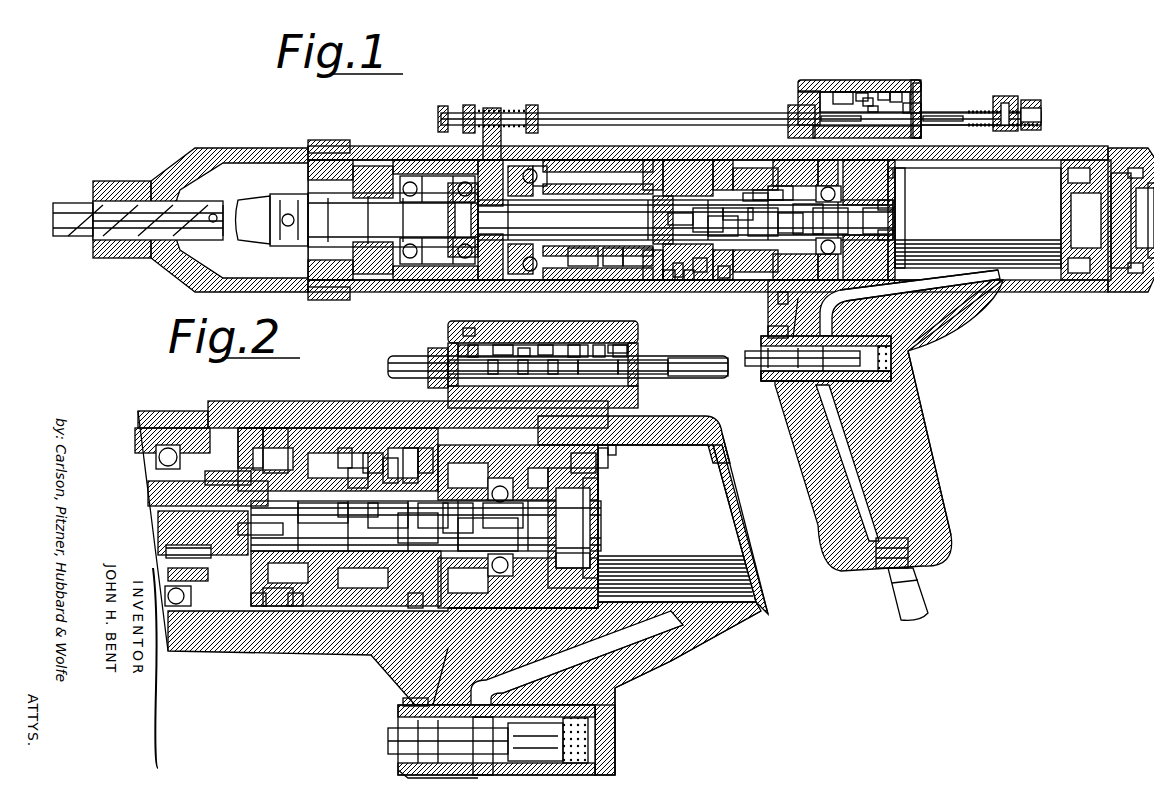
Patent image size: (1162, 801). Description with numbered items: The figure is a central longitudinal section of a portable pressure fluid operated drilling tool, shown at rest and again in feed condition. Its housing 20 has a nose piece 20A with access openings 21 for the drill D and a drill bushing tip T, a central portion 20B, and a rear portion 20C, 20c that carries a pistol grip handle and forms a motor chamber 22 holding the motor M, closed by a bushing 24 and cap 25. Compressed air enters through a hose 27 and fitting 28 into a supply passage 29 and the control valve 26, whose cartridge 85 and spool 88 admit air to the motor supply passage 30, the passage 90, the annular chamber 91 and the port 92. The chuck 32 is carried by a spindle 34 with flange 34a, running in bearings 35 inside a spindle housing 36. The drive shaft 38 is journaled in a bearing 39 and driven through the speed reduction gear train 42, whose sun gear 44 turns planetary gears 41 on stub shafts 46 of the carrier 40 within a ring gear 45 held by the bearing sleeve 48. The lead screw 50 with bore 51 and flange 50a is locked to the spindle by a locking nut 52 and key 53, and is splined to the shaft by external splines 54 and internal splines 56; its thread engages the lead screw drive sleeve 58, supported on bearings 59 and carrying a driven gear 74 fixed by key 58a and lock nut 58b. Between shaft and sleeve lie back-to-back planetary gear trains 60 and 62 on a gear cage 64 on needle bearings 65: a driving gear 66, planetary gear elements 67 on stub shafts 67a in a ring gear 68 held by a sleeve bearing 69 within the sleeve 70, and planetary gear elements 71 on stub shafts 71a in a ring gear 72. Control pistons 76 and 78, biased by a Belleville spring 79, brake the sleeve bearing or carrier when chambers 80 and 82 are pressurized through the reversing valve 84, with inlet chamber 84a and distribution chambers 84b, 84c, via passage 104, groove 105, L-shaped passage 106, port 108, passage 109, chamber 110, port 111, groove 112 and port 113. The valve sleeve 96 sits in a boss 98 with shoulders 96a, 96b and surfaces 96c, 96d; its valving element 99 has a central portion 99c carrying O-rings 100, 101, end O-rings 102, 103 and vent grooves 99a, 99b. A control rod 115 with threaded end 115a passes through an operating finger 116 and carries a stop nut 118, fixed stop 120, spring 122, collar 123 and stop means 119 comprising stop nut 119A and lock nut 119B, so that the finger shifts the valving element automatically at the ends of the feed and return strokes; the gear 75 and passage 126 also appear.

In FIG. 1, the drill bushing tip T is at (62, 195).
In FIG. 1, the drill D is at (205, 206).
In FIG. 1, the motor M is at (1026, 268).
In FIG. 2, the motor M is at (714, 542).
In FIG. 1, the housing 20 is at (582, 289).
In FIG. 2, the housing 20 is at (170, 653).
In FIG. 1, the nose piece 20A is at (185, 152).
In FIG. 1, the central housing portion 20B is at (530, 145).
In FIG. 2, the central housing portion 20B is at (130, 405).
In FIG. 1, the rear housing portion 20C is at (1058, 142).
In FIG. 2, the rear housing portion 20c is at (665, 410).
In FIG. 1, the access openings 21 is at (250, 185).
In FIG. 1, the motor chamber 22 is at (1018, 165).
In FIG. 2, the motor chamber 22 is at (690, 440).
In FIG. 1, the bushing 24 is at (1088, 270).
In FIG. 1, the cap 25 is at (1145, 268).
In FIG. 1, the control valve 26 is at (902, 380).
In FIG. 2, the control valve 26 is at (590, 768).
In FIG. 1, the hose 27 is at (916, 592).
In FIG. 1, the fitting 28 is at (902, 546).
In FIG. 1, the supply passage 29 is at (868, 500).
In FIG. 2, the supply passage 29 is at (392, 767).
In FIG. 1, the motor supply passage 30 is at (950, 285).
In FIG. 2, the motor supply passage 30 is at (668, 606).
In FIG. 1, the chuck 32 is at (336, 145).
In FIG. 1, the spindle 34 is at (398, 250).
In FIG. 1, the radial flange 34a is at (484, 152).
In FIG. 1, the antifriction bearings 35 is at (420, 235).
In FIG. 1, the spindle housing 36 is at (372, 158).
In FIG. 1, the drive shaft 38 is at (572, 236).
In FIG. 2, the drive shaft 38 is at (150, 512).
In FIG. 1, the antifriction bearing 39 is at (828, 200).
In FIG. 2, the antifriction bearing 39 is at (480, 533).
In FIG. 1, the carrier 40 is at (878, 210).
In FIG. 2, the carrier 40 is at (500, 512).
In FIG. 1, the planetary gears 41 is at (905, 236).
In FIG. 2, the planetary gears 41 is at (583, 528).
In FIG. 1, the speed reduction gear train 42 is at (930, 295).
In FIG. 2, the speed reduction gear train 42 is at (640, 650).
In FIG. 1, the sun gear 44 is at (882, 197).
In FIG. 2, the sun gear 44 is at (585, 505).
In FIG. 1, the ring gear 45 is at (908, 308).
In FIG. 1, the stub shafts 46 is at (882, 222).
In FIG. 2, the stub shafts 46 is at (583, 548).
In FIG. 1, the bearing sleeve 48 is at (862, 300).
In FIG. 2, the bearing sleeve 48 is at (545, 620).
In FIG. 1, the lead screw 50 is at (552, 243).
In FIG. 2, the lead screw 50 is at (142, 482).
In FIG. 1, the radial flange 50a is at (492, 252).
In FIG. 1, the bore 51 is at (505, 175).
In FIG. 1, the locking nut 52 is at (472, 242).
In FIG. 1, the key 53 is at (465, 225).
In FIG. 1, the external splines 54 is at (572, 194).
In FIG. 2, the external splines 54 is at (205, 463).
In FIG. 1, the internal splines 56 is at (655, 196).
In FIG. 2, the internal splines 56 is at (158, 542).
In FIG. 1, the lead screw drive sleeve 58 is at (595, 250).
In FIG. 2, the lead screw drive sleeve 58 is at (160, 565).
In FIG. 1, the key 58a is at (672, 210).
In FIG. 2, the key 58a is at (232, 526).
In FIG. 1, the lock nut 58b is at (628, 248).
In FIG. 2, the lock nut 58b is at (210, 572).
In FIG. 1, the antifriction bearings 59 is at (580, 176).
In FIG. 1, the planetary gear train 60 is at (692, 262).
In FIG. 2, the planetary gear train 60 is at (312, 598).
In FIG. 1, the planetary gear train 62 is at (668, 268).
In FIG. 2, the planetary gear train 62 is at (270, 598).
In FIG. 1, the gear cage 64 is at (676, 158).
In FIG. 2, the gear cage 64 is at (300, 420).
In FIG. 1, the needle-type bearing elements 65 is at (712, 228).
In FIG. 2, the needle-type bearing elements 65 is at (300, 496).
In FIG. 1, the driving terminal gear 66 is at (745, 200).
In FIG. 2, the driving terminal gear 66 is at (372, 500).
In FIG. 1, the planetary gear elements 67 is at (735, 165).
In FIG. 2, the planetary gear elements 67 is at (350, 460).
In FIG. 1, the stub shafts 67a is at (728, 224).
In FIG. 2, the stub shafts 67a is at (346, 493).
In FIG. 1, the ring gear 68 is at (753, 182).
In FIG. 2, the ring gear 68 is at (365, 445).
In FIG. 1, the sleeve bearing 69 is at (745, 183).
In FIG. 2, the sleeve bearing 69 is at (337, 440).
In FIG. 1, the sleeve 70 is at (710, 155).
In FIG. 2, the sleeve 70 is at (270, 420).
In FIG. 1, the planetary gear elements 71 is at (660, 272).
In FIG. 2, the planetary gear elements 71 is at (250, 598).
In FIG. 1, the stub shafts 71a is at (682, 272).
In FIG. 2, the stub shafts 71a is at (288, 598).
In FIG. 1, the ring gear 72 is at (660, 150).
In FIG. 2, the ring gear 72 is at (252, 420).
In FIG. 1, the driven gear element 74 is at (692, 224).
In FIG. 2, the driven gear element 74 is at (258, 493).
In FIG. 1, the gear 75 is at (716, 270).
In FIG. 1, the control piston 76 is at (770, 178).
In FIG. 2, the control piston 76 is at (382, 450).
In FIG. 2, the control piston 78 is at (405, 530).
In FIG. 1, the Belleville spring 79 is at (780, 204).
In FIG. 2, the Belleville spring 79 is at (424, 494).
In FIG. 1, the chamber 80 is at (805, 192).
In FIG. 2, the chamber 80 is at (452, 494).
In FIG. 2, the chamber 82 is at (435, 598).
In FIG. 1, the reversing valve 84 is at (835, 82).
In FIG. 2, the reversing valve 84 is at (520, 337).
In FIG. 1, the inlet chamber 84a is at (858, 85).
In FIG. 2, the forward distribution chamber 84b is at (495, 337).
In FIG. 2, the rear distribution chamber 84c is at (540, 337).
In FIG. 1, the cartridge 85 is at (780, 370).
In FIG. 2, the cartridge 85 is at (600, 700).
In FIG. 1, the spool 88 is at (745, 352).
In FIG. 2, the spool 88 is at (385, 728).
In FIG. 1, the passage 90 is at (855, 290).
In FIG. 2, the passage 90 is at (512, 672).
In FIG. 1, the annular chamber 91 is at (900, 318).
In FIG. 2, the annular chamber 91 is at (600, 684).
In FIG. 1, the port 92 is at (878, 170).
In FIG. 2, the port 92 is at (578, 470).
In FIG. 1, the sleeve 96 is at (882, 95).
In FIG. 2, the sleeve 96 is at (628, 322).
In FIG. 2, the tapered internal shoulder 96a is at (530, 355).
In FIG. 2, the tapered internal shoulder 96b is at (588, 355).
In FIG. 1, the tapered annular surface 96c is at (905, 168).
In FIG. 2, the tapered annular surface 96c is at (630, 437).
In FIG. 1, the tapered annular surface 96d is at (830, 88).
In FIG. 2, the tapered annular surface 96d is at (462, 322).
In FIG. 1, the hollow boss 98 is at (915, 80).
In FIG. 2, the hollow boss 98 is at (615, 337).
In FIG. 1, the valving element 99 is at (915, 102).
In FIG. 2, the valving element 99 is at (640, 386).
In FIG. 1, the groove 99a is at (915, 110).
In FIG. 2, the groove 99a is at (620, 354).
In FIG. 1, the groove 99b is at (818, 106).
In FIG. 2, the groove 99b is at (445, 356).
In FIG. 1, the central portion 99c is at (862, 90).
In FIG. 2, the central portion 99c is at (520, 338).
In FIG. 1, the O-ring 100 is at (852, 80).
In FIG. 2, the O-ring 100 is at (553, 352).
In FIG. 1, the O-ring 101 is at (876, 80).
In FIG. 2, the O-ring 101 is at (568, 337).
In FIG. 1, the O-ring 102 is at (915, 92).
In FIG. 2, the O-ring 102 is at (628, 340).
In FIG. 1, the O-ring 103 is at (808, 110).
In FIG. 2, the O-ring 103 is at (455, 338).
In FIG. 2, the passage 104 is at (495, 355).
In FIG. 1, the annular groove 105 is at (792, 278).
In FIG. 2, the annular groove 105 is at (440, 625).
In FIG. 1, the L-shaped passage 106 is at (776, 292).
In FIG. 1, the port 108 is at (886, 82).
In FIG. 2, the port 108 is at (591, 337).
In FIG. 1, the longitudinal passage 109 is at (900, 170).
In FIG. 2, the longitudinal passage 109 is at (600, 445).
In FIG. 1, the annular chamber 110 is at (778, 152).
In FIG. 2, the annular chamber 110 is at (402, 440).
In FIG. 2, the port 111 is at (418, 440).
In FIG. 2, the annular groove 112 is at (408, 600).
In FIG. 1, the port 113 is at (820, 154).
In FIG. 2, the port 113 is at (440, 468).
In FIG. 1, the control rod 115 is at (596, 104).
In FIG. 2, the control rod 115 is at (392, 350).
In FIG. 1, the threaded rear end 115a is at (1028, 100).
In FIG. 1, the operating finger 116 is at (462, 97).
In FIG. 1, the stop nut 118 is at (433, 100).
In FIG. 1, the stop means 119 is at (998, 94).
In FIG. 1, the stop nut 119A is at (997, 80).
In FIG. 1, the lock nut 119B is at (1020, 92).
In FIG. 1, the fixed stop 120 is at (790, 100).
In FIG. 2, the fixed stop 120 is at (428, 345).
In FIG. 1, the spring 122 is at (508, 100).
In FIG. 1, the collar 123 is at (522, 100).
In FIG. 1, the passage 126 is at (762, 325).
In FIG. 2, the passage 126 is at (400, 690).